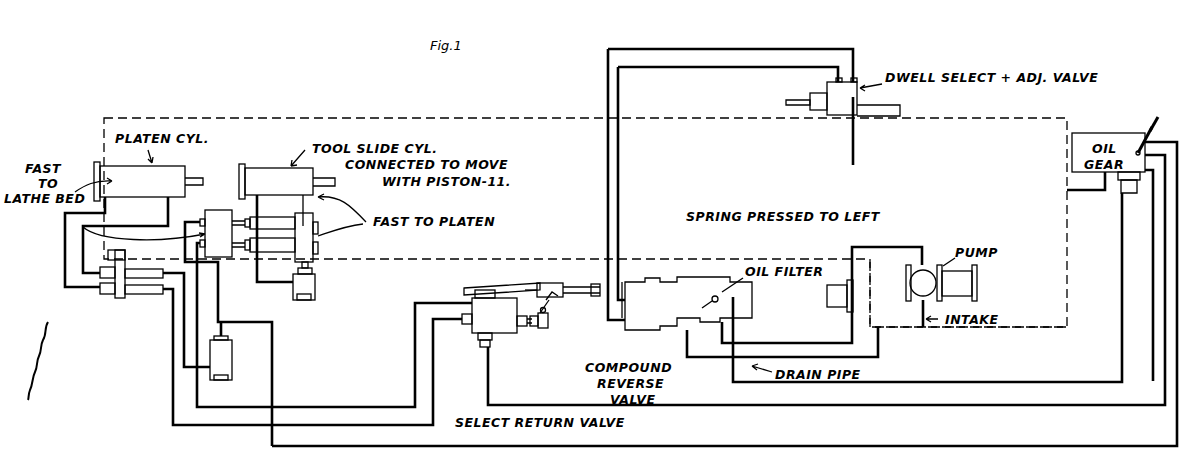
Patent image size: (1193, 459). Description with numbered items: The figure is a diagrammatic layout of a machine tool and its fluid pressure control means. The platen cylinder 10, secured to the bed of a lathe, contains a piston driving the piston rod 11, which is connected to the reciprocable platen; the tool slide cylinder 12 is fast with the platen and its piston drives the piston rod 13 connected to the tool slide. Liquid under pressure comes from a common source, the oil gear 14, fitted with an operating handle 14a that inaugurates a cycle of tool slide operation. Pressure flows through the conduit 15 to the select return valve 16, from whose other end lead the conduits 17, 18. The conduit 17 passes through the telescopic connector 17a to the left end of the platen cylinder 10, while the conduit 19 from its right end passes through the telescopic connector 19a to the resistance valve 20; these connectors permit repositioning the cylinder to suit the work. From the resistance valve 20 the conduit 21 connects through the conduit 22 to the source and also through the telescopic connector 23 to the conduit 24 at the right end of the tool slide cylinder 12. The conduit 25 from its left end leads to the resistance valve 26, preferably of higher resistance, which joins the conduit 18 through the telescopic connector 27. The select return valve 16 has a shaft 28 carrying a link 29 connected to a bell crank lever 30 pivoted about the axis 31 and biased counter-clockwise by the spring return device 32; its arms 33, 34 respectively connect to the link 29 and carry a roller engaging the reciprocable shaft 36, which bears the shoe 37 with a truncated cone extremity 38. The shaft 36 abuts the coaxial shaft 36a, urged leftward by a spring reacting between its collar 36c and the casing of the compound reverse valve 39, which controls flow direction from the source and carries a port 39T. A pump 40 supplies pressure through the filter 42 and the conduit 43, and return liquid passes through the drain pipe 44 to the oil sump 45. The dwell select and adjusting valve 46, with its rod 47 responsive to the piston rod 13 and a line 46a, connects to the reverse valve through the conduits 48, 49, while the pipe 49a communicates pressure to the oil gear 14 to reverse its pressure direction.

The platen cylinder 10 is at (146, 189).
The piston rod 11 is at (200, 172).
The tool slide cylinder 12 is at (274, 191).
The piston rod 13 is at (336, 178).
The source of liquid pressure 14 is at (1134, 132).
The operating handle 14a is at (1154, 122).
The conduit 15 is at (978, 406).
The select return valve 16 is at (499, 324).
The conduit 17 is at (64, 242).
The telescopic connector 17a is at (120, 296).
The conduit 18 is at (203, 310).
The conduit 19 is at (142, 226).
The telescopic connector 19a is at (148, 296).
The resistance valve 20 is at (228, 357).
The conduit 21 is at (218, 324).
The conduit 22 is at (676, 439).
The telescopic connector 23 is at (276, 224).
The conduit 24 is at (312, 206).
The conduit 25 is at (253, 268).
The resistance valve 26 is at (316, 285).
The telescopic connector 27 is at (281, 250).
The shaft 28 is at (464, 326).
The link 29 is at (548, 330).
The bell crank lever 30 is at (552, 310).
The axis 31 is at (550, 316).
The spring return device 32 is at (520, 300).
The arm 33 is at (540, 330).
The arm 34 is at (560, 298).
The reciprocable shaft 36 is at (585, 286).
The shaft 36a is at (644, 268).
The collar 36c is at (600, 252).
The shoe 37 is at (540, 283).
The truncated cone extremity 38 is at (555, 282).
The compound reverse valve 39 is at (706, 276).
The valve port 39T is at (696, 308).
The pump 40 is at (978, 290).
The filter 42 is at (826, 299).
The conduit 43 is at (805, 342).
The drain pipe 44 is at (880, 348).
The oil sump 45 is at (1052, 330).
The dwell select and adjusting valve 46 is at (832, 114).
The pipe 46a is at (855, 140).
The rod 47 is at (798, 106).
The conduit 48 is at (751, 48).
The conduit 49 is at (739, 68).
The pipe 49a is at (922, 386).